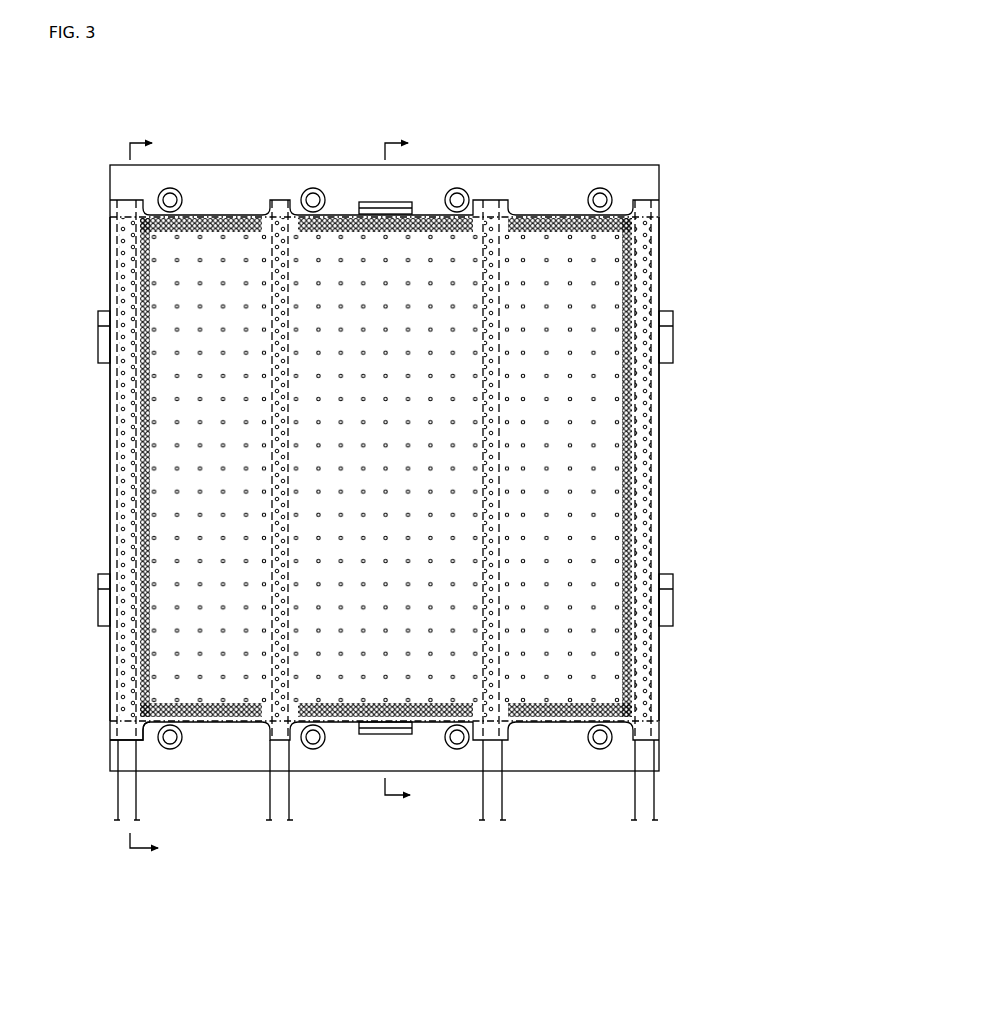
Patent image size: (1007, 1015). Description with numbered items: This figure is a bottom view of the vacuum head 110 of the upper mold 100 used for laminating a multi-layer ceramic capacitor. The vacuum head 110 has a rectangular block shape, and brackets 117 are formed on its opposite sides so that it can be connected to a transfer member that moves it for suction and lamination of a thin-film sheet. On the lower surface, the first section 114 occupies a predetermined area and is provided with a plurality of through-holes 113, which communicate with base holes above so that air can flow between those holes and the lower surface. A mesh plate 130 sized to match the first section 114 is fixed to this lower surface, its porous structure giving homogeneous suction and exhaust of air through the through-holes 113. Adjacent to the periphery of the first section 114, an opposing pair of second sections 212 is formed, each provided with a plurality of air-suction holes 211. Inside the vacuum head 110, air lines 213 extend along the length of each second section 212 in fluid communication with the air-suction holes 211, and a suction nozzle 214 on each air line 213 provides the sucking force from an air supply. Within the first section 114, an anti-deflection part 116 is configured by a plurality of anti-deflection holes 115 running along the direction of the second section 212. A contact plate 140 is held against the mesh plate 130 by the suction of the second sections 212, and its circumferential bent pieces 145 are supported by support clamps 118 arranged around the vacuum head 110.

The upper mold 100 is at (402, 72).
The vacuum head 110 is at (570, 160).
The through-hole 113 is at (432, 262).
The first section 114 is at (350, 266).
The anti-deflection hole 115 is at (270, 415).
The anti-deflection part 116 is at (266, 372).
The bracket 117 is at (216, 180).
The support clamp 118 is at (378, 203).
The mesh plate 130 is at (262, 723).
The contact plate 140 is at (135, 744).
The bent piece 145 is at (400, 214).
The air-suction hole 211 is at (113, 650).
The second section 212 is at (110, 526).
The air line 213 is at (112, 463).
The suction nozzle 214 is at (278, 812).